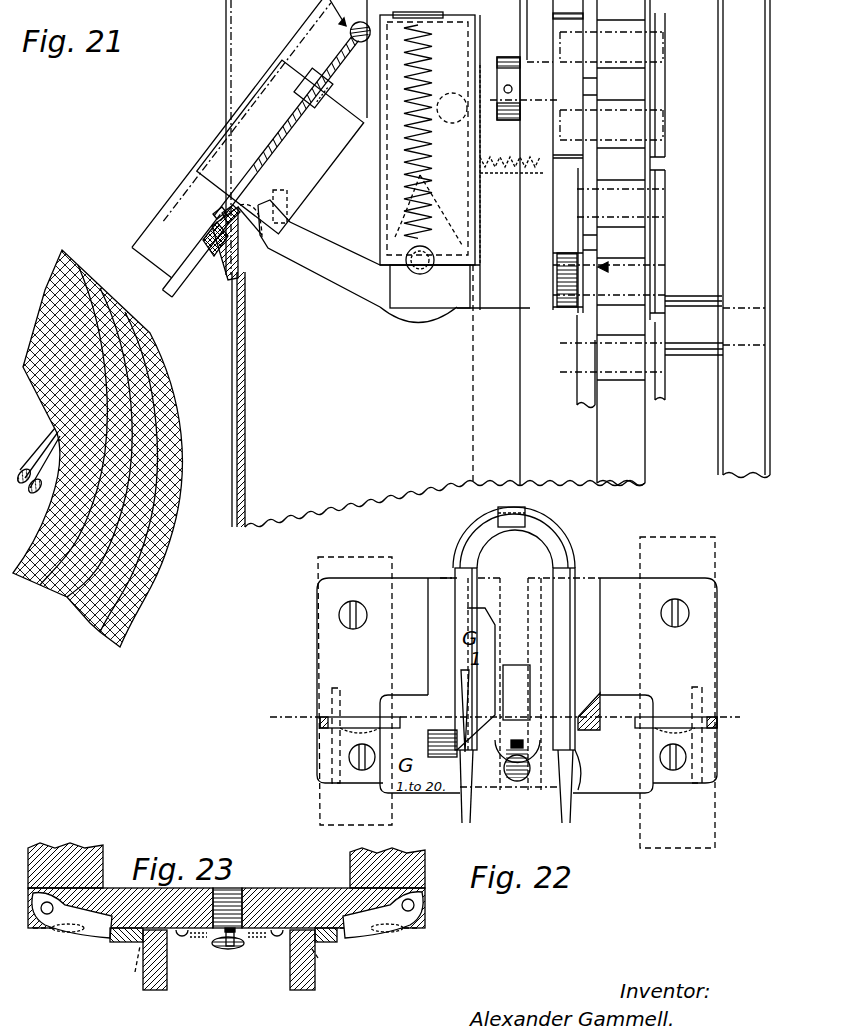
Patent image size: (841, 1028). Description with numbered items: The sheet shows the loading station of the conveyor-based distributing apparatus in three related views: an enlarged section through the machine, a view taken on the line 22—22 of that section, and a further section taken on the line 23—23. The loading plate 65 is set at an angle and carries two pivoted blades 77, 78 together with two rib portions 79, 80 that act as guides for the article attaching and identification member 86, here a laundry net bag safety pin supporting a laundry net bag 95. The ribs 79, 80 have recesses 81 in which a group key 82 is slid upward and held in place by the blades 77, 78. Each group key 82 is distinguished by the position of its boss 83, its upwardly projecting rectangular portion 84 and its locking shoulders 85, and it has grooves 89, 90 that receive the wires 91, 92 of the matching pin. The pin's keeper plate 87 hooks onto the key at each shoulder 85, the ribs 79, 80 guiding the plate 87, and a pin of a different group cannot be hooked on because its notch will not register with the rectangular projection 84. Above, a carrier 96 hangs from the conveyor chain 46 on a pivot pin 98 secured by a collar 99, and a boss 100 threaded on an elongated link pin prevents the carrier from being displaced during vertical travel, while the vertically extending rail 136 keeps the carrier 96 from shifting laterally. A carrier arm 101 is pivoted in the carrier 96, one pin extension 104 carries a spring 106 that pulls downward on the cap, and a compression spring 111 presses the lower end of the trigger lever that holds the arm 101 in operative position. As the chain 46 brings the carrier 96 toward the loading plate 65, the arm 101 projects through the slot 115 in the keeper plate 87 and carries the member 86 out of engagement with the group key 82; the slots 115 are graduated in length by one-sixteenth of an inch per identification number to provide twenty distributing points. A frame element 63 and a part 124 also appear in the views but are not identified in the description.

In FIG. 21, the line 22— 22 is at (166, 277).
In FIG. 22, the line 23— 23 is at (282, 697).
In FIG. 21, the conveyor chain 46 is at (617, 362).
In FIG. 21, the frame plate 63 is at (648, 444).
In FIG. 21, the loading plate 65 is at (325, 165).
In FIG. 22, the loading plate 65 is at (700, 650).
In FIG. 23, the loading plate 65 is at (293, 888).
In FIG. 21, the pivoted blade 77 is at (288, 206).
In FIG. 22, the pivoted blade 77 is at (333, 723).
In FIG. 23, the pivoted blade 77 is at (50, 930).
In FIG. 22, the pivoted blade 78 is at (685, 722).
In FIG. 23, the pivoted blade 78 is at (408, 924).
In FIG. 21, the rib portion 79 is at (217, 147).
In FIG. 22, the rib portion 79 is at (437, 642).
In FIG. 23, the rib portion 79 is at (163, 990).
In FIG. 22, the rib portion 80 is at (590, 632).
In FIG. 23, the rib portion 80 is at (312, 990).
In FIG. 22, the recess 81 is at (428, 736).
In FIG. 23, the recess 81 is at (135, 972).
In FIG. 21, the group key 82 is at (204, 259).
In FIG. 22, the group key 82 is at (600, 786).
In FIG. 23, the group key 82 is at (125, 943).
In FIG. 21, the boss 83 is at (218, 232).
In FIG. 22, the boss 83 is at (517, 782).
In FIG. 23, the boss 83 is at (227, 950).
In FIG. 21, the upwardly projecting rectangular portion 84 is at (245, 253).
In FIG. 22, the upwardly projecting rectangular portion 84 is at (517, 740).
In FIG. 23, the upwardly projecting rectangular portion 84 is at (231, 948).
In FIG. 21, the locking shoulder 85 is at (213, 214).
In FIG. 22, the locking shoulder 85 is at (498, 790).
In FIG. 23, the locking shoulder 85 is at (183, 940).
In FIG. 21, the article attaching and identification member 86 is at (335, 46).
In FIG. 21, the keeper plate 87 is at (300, 124).
In FIG. 22, the groove 89 is at (462, 780).
In FIG. 22, the groove 90 is at (578, 775).
In FIG. 23, the groove 90 is at (278, 940).
In FIG. 21, the wire 91 is at (168, 292).
In FIG. 22, the wire 91 is at (464, 822).
In FIG. 22, the wire 92 is at (563, 822).
In FIG. 21, the laundry net bag 95 is at (160, 420).
In FIG. 21, the carrier 96 is at (503, 310).
In FIG. 21, the pivot pin 98 is at (536, 62).
In FIG. 21, the collar 99 is at (505, 60).
In FIG. 21, the boss 100 is at (572, 290).
In FIG. 21, the carrier arm 101 is at (333, 272).
In FIG. 21, the extension of pin 104 is at (418, 268).
In FIG. 21, the spring 106 is at (418, 205).
In FIG. 21, the compression spring 111 is at (511, 165).
In FIG. 21, the slot 115 is at (319, 132).
In FIG. 22, the slot 115 is at (518, 668).
In FIG. 22, the handle 124 is at (520, 511).
In FIG. 21, the vertically extending rail 136 is at (604, 374).